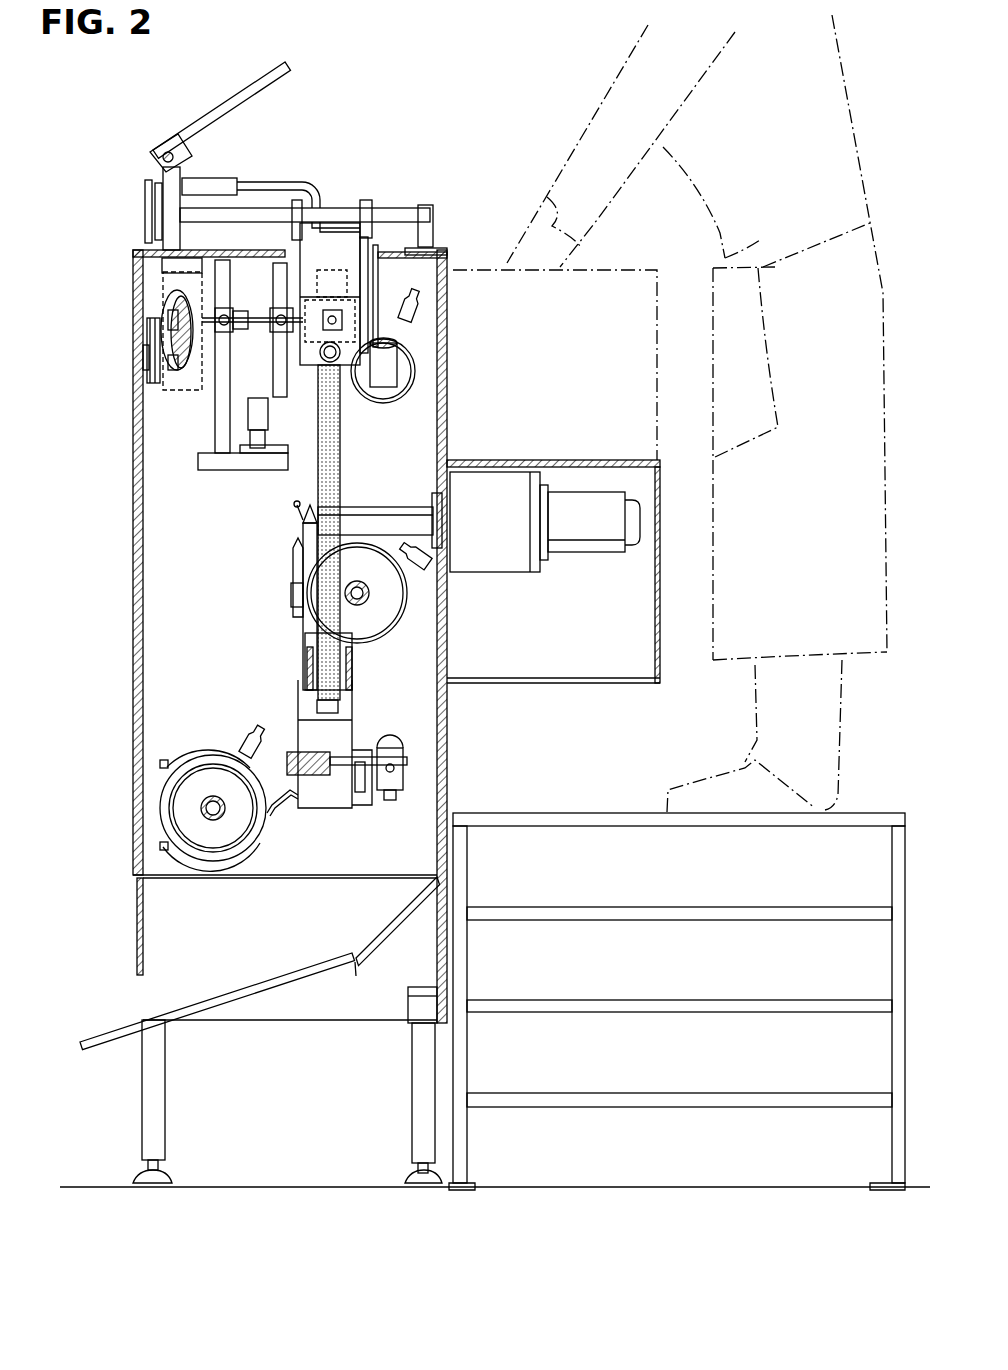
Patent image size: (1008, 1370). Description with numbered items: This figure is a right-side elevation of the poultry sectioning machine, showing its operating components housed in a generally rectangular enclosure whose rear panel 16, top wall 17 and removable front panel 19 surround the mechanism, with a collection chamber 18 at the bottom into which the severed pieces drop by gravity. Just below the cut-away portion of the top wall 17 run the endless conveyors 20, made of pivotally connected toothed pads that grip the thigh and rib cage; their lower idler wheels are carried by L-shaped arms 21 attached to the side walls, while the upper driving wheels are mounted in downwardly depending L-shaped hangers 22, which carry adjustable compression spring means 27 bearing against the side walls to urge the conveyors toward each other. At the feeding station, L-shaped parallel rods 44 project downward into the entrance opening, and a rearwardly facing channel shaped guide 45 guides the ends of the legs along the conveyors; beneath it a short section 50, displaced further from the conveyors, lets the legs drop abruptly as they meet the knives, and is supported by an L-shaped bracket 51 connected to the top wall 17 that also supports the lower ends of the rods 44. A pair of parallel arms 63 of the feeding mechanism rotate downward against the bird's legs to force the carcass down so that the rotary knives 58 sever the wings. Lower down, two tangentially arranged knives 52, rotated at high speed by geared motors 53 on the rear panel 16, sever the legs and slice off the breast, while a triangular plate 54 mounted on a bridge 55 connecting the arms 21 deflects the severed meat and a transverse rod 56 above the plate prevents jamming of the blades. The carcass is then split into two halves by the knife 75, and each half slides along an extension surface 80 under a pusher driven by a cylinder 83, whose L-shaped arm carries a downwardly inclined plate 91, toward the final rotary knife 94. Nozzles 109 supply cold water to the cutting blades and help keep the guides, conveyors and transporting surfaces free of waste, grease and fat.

The rear panel 16 is at (446, 738).
The top wall 17 is at (242, 252).
The collection chamber 18 is at (296, 934).
The removable front panel 19 is at (133, 660).
The endless conveyors 20 is at (340, 472).
The L-shaped arms 21 is at (310, 672).
The L-shaped hangers 22 is at (370, 216).
The adjustable compression spring means 27 is at (328, 358).
The L-shaped parallel rods 44 is at (298, 181).
The channel shaped guide 45 is at (278, 283).
The short section 50 is at (262, 415).
The L-shaped bracket 51 is at (218, 410).
The knives 52 is at (308, 553).
The geared motors 53 is at (524, 526).
The triangular plate 54 is at (292, 548).
The bridge 55 is at (300, 595).
The transverse rod 56 is at (296, 508).
The rotary knives 58 is at (400, 373).
The parallel arms 63 is at (218, 104).
The knife 75 is at (372, 630).
The extension surface 80 is at (331, 805).
The cylinder 83 is at (392, 724).
The plate 91 is at (290, 803).
The rotary knife 94 is at (237, 845).
The nozzles 109 is at (430, 302).